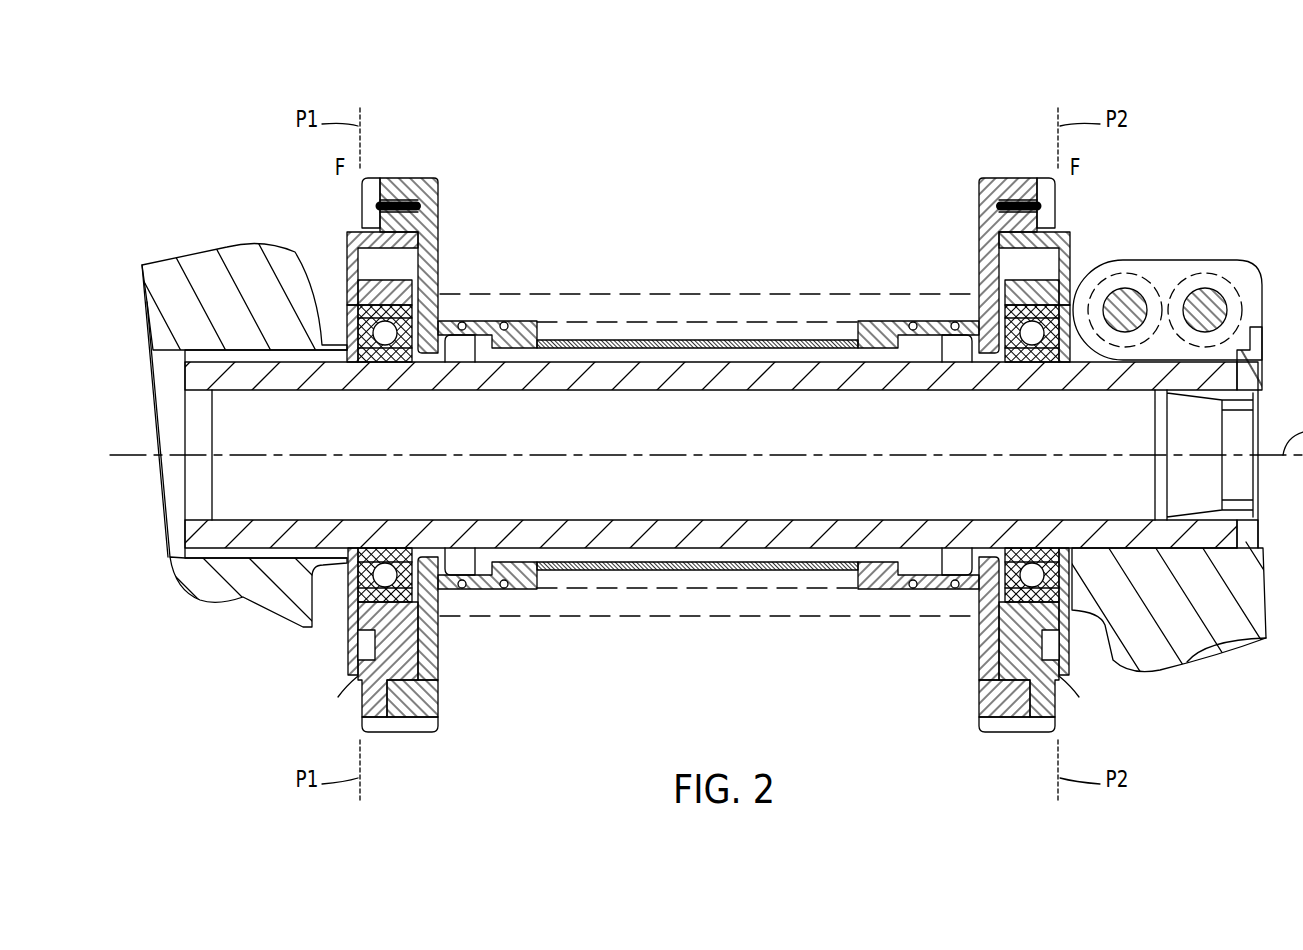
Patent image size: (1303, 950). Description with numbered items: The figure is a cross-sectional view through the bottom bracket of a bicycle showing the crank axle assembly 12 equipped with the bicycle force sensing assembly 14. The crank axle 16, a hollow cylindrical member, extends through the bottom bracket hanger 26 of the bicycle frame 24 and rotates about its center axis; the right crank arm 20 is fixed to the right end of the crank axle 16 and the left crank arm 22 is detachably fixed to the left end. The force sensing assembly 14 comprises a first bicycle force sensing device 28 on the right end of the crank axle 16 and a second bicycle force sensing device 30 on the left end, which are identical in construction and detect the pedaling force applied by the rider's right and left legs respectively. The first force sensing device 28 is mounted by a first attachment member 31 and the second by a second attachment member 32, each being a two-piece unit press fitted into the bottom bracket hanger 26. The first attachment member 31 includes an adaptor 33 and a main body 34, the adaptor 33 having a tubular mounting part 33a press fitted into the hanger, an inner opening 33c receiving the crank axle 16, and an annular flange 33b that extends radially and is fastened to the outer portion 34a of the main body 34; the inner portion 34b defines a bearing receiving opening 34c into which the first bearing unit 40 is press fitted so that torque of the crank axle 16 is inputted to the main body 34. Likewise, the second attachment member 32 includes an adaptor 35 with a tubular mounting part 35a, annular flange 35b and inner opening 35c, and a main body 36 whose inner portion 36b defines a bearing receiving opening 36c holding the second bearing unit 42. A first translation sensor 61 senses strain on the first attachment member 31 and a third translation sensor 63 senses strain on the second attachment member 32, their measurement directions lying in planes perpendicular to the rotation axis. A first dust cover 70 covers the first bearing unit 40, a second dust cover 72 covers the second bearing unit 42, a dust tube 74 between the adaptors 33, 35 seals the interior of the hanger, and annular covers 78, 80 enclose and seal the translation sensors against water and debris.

The crank axle assembly 12 is at (1198, 142).
The bicycle force sensing assembly 14 is at (510, 72).
The crank axle 16 is at (718, 540).
The right crank arm 20 is at (240, 300).
The left crank arm 22 is at (1166, 268).
The bicycle frame 24 is at (754, 214).
The bottom bracket hanger 26 is at (678, 292).
The first bicycle force sensing device 28 is at (448, 148).
The second bicycle force sensing device 30 is at (961, 148).
The first attachment member 31 is at (443, 108).
The second attachment member 32 is at (978, 108).
The adaptor 33 is at (412, 170).
The tubular mounting part 33a is at (487, 321).
The annular flange 33b is at (438, 185).
The inner opening 33c is at (445, 352).
The main body 34 is at (376, 170).
The outer portion 34a is at (380, 706).
The inner portion 34b is at (393, 295).
The bearing receiving opening 34c is at (352, 365).
The adaptor 35 is at (1008, 170).
The tubular mounting part 35a is at (944, 321).
The annular flange 35b is at (982, 185).
The inner opening 35c is at (970, 350).
The main body 36 is at (1040, 170).
The inner portion 36b is at (1022, 295).
The bearing receiving opening 36c is at (1052, 362).
The first bearing unit 40 is at (398, 358).
The second bearing unit 42 is at (1018, 356).
The first translation sensor 61 is at (348, 655).
The third translation sensor 63 is at (1065, 640).
The first dust seal or cover 70 is at (372, 548).
The second dust seal or cover 72 is at (1040, 548).
The dust tube 74 is at (618, 343).
The first dust seal or cover 78 is at (348, 250).
The second dust seal or cover 80 is at (1063, 262).